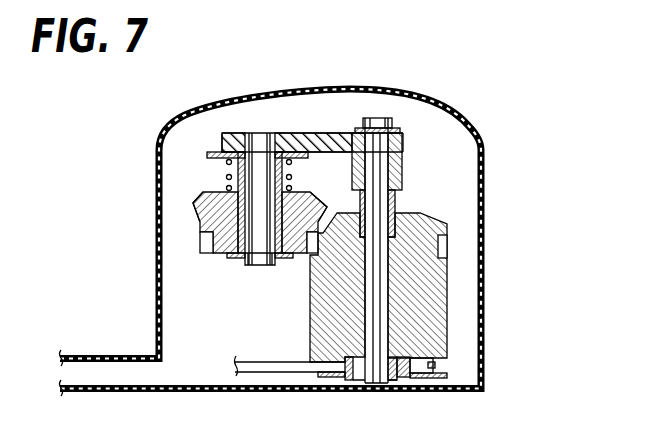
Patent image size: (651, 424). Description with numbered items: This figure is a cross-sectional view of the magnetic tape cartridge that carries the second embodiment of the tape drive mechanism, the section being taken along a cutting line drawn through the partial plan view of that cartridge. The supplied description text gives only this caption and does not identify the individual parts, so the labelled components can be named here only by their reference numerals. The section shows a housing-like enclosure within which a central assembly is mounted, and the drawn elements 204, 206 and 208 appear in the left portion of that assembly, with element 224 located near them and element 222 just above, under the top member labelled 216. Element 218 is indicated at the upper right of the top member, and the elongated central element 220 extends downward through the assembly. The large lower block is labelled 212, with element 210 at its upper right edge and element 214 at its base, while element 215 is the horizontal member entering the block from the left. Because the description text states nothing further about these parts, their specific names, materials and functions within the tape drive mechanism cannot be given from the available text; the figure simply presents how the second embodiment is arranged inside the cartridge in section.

The wedge block 204 is at (193, 202).
The chamfered face 206 is at (203, 216).
The collar 208 is at (203, 241).
The recess 210 is at (442, 236).
The support block 212 is at (440, 285).
The fastening bolt 214 is at (423, 367).
The pipe 215 is at (262, 362).
The top plate 216 is at (300, 135).
The boss and nut 218 is at (347, 126).
The shaft 220 is at (377, 187).
The flange 222 is at (212, 152).
The ball bearings 224 is at (226, 176).